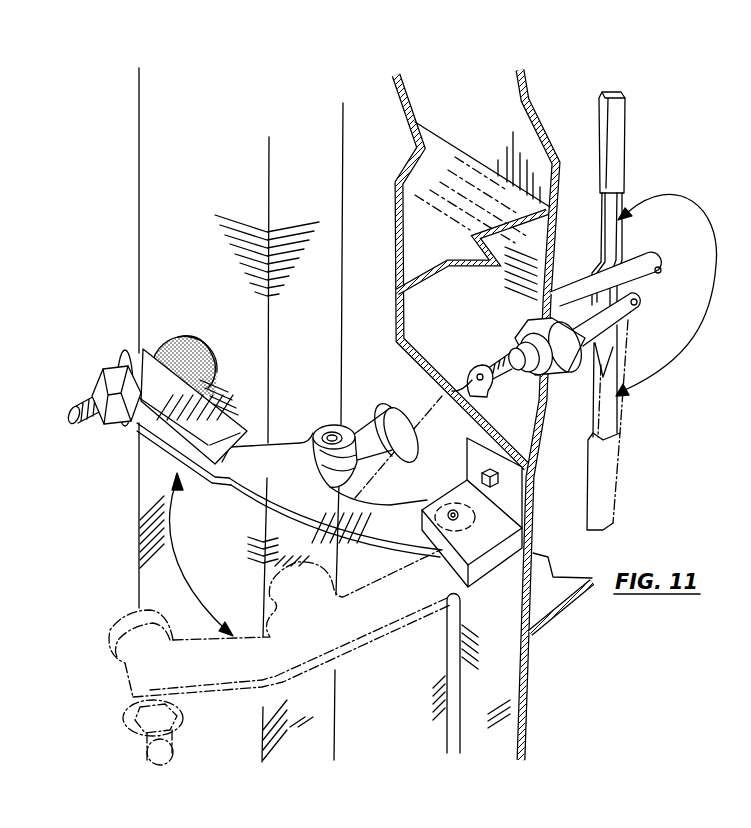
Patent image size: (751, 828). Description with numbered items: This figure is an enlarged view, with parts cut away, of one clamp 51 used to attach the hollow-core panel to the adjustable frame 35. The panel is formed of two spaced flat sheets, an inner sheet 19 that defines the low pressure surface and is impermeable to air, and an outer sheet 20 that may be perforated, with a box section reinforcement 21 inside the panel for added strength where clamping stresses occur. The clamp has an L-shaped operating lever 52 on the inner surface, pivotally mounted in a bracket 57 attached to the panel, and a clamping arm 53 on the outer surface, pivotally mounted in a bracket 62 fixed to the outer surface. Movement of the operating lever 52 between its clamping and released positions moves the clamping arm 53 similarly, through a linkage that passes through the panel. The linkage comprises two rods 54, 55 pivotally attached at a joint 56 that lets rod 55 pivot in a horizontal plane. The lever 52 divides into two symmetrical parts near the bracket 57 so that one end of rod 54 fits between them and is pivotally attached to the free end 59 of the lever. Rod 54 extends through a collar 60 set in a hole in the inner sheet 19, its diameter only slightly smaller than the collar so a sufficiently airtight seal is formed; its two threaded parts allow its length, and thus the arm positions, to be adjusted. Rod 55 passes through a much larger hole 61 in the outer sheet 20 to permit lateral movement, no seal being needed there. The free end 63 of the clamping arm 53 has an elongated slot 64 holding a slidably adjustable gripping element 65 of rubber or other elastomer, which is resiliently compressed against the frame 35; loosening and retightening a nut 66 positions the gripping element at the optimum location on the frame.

The inner sheet 19 is at (532, 104).
The outer sheet 20 is at (410, 121).
The box section reinforcement 21 is at (457, 162).
The adjustable frame 35 is at (143, 262).
The clamp 51 is at (312, 430).
The operating lever 52 is at (618, 123).
The clamping arm 53 is at (242, 482).
The rod 54 is at (507, 374).
The rod 55 is at (372, 430).
The joint 56 is at (474, 375).
The bracket 57 is at (617, 313).
The free end of the lever 59 is at (670, 268).
The collar 60 is at (555, 378).
The hole 61 is at (279, 580).
The bracket 62 is at (480, 570).
The free end of the clamping arm 63 is at (136, 364).
The elongated slot 64 is at (160, 428).
The gripping element 65 is at (199, 366).
The nut 66 is at (96, 388).